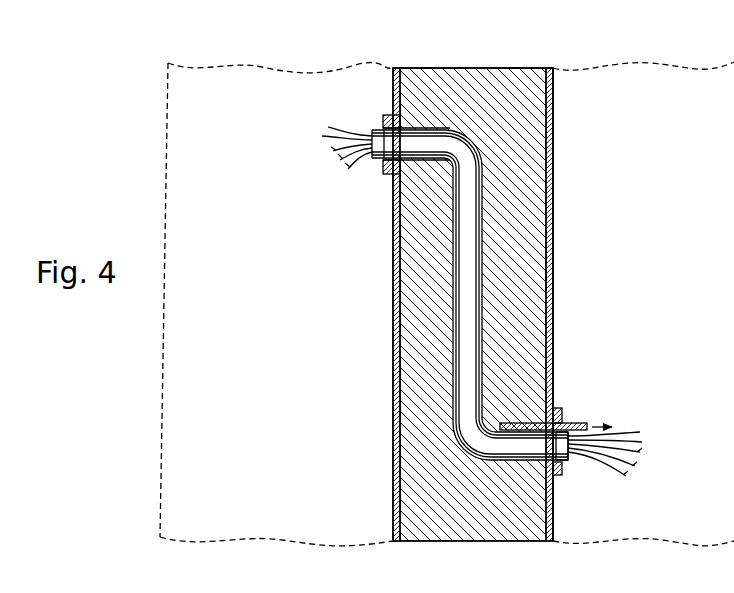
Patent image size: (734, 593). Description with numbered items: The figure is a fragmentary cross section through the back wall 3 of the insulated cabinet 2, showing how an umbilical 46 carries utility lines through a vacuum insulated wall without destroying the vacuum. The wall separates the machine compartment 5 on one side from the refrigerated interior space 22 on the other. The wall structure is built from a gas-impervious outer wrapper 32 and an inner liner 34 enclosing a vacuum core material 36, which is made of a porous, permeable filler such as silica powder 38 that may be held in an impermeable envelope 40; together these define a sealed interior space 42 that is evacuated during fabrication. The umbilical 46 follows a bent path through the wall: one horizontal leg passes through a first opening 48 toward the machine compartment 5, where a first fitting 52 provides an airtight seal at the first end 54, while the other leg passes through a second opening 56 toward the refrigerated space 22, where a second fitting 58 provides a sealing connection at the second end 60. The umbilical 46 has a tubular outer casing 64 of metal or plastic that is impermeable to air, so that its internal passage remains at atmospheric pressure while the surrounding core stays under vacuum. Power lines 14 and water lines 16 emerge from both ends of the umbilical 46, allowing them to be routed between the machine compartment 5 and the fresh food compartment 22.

The insulated cabinet 2 is at (557, 117).
The back wall 3 is at (552, 82).
The machine compartment 5 is at (698, 393).
The power lines 14 is at (345, 152).
The water lines 16 is at (338, 146).
The refrigerated interior space 22 is at (290, 123).
The outer door panel wrapper member 32 is at (550, 210).
The inner liner 34 is at (393, 283).
The vacuum core material 36 is at (540, 260).
The silica powder filler 38 is at (513, 200).
The impermeable envelope 40 is at (553, 277).
The interior space 42 is at (472, 72).
The umbilical 46 is at (494, 399).
The first opening 48 is at (563, 467).
The first fitting 52 is at (560, 470).
The first end 54 is at (568, 462).
The second opening 56 is at (380, 131).
The second fitting 58 is at (386, 125).
The second end 60 is at (372, 162).
The tubular outer casing 64 is at (550, 366).